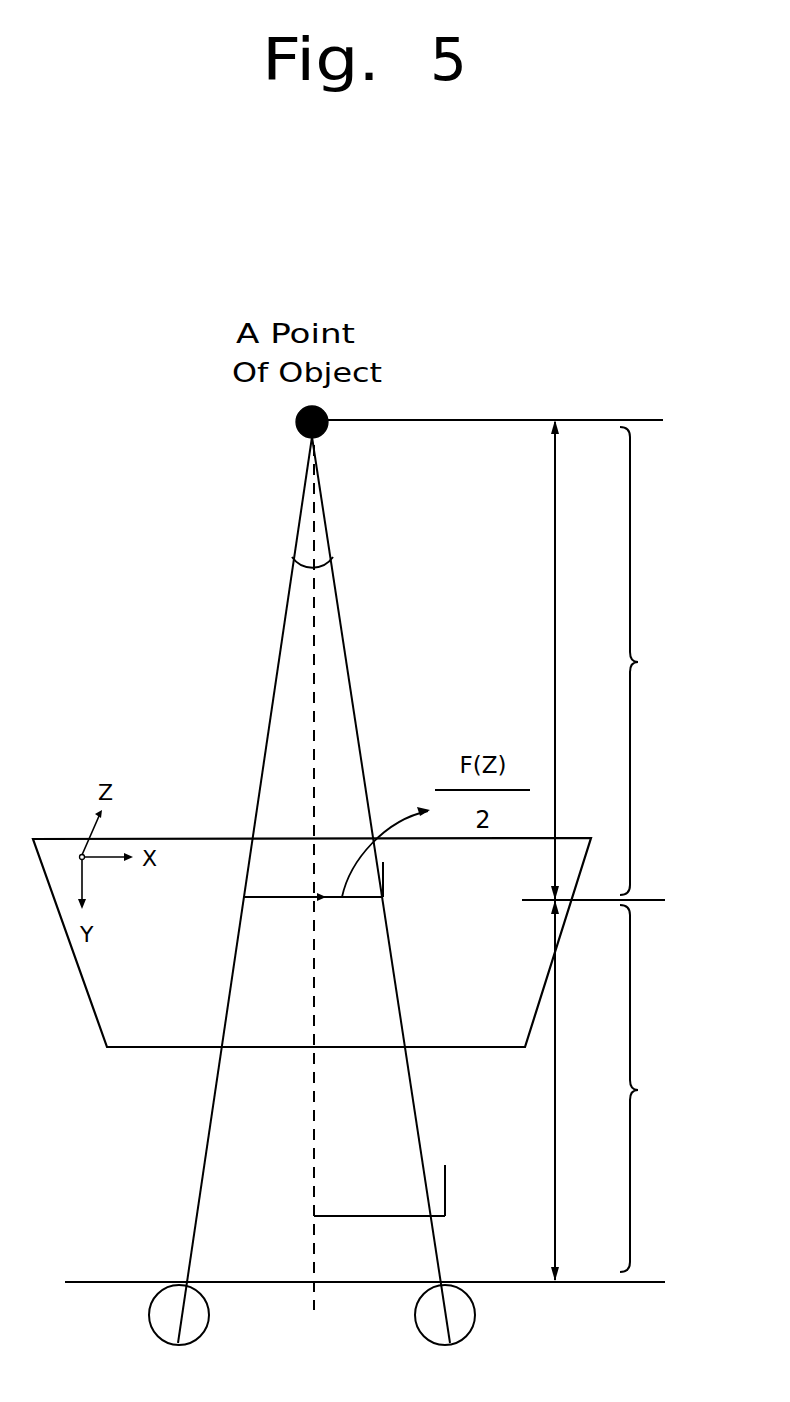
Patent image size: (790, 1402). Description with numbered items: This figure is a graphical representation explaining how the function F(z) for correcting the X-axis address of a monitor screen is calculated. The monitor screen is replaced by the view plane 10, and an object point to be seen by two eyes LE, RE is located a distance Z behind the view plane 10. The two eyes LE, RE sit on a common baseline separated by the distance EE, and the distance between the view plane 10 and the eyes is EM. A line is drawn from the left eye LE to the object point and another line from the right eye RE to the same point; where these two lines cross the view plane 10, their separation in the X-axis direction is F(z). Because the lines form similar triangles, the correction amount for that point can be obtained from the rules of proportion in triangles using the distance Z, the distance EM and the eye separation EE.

The view plane 10 is at (572, 858).
The left eye LE is at (179, 1333).
The right eye RE is at (445, 1333).
The distance behind the view plane Z is at (643, 661).
The distance between view plane and eyes EM is at (658, 1088).
The distance between two eyes EE is at (375, 1216).